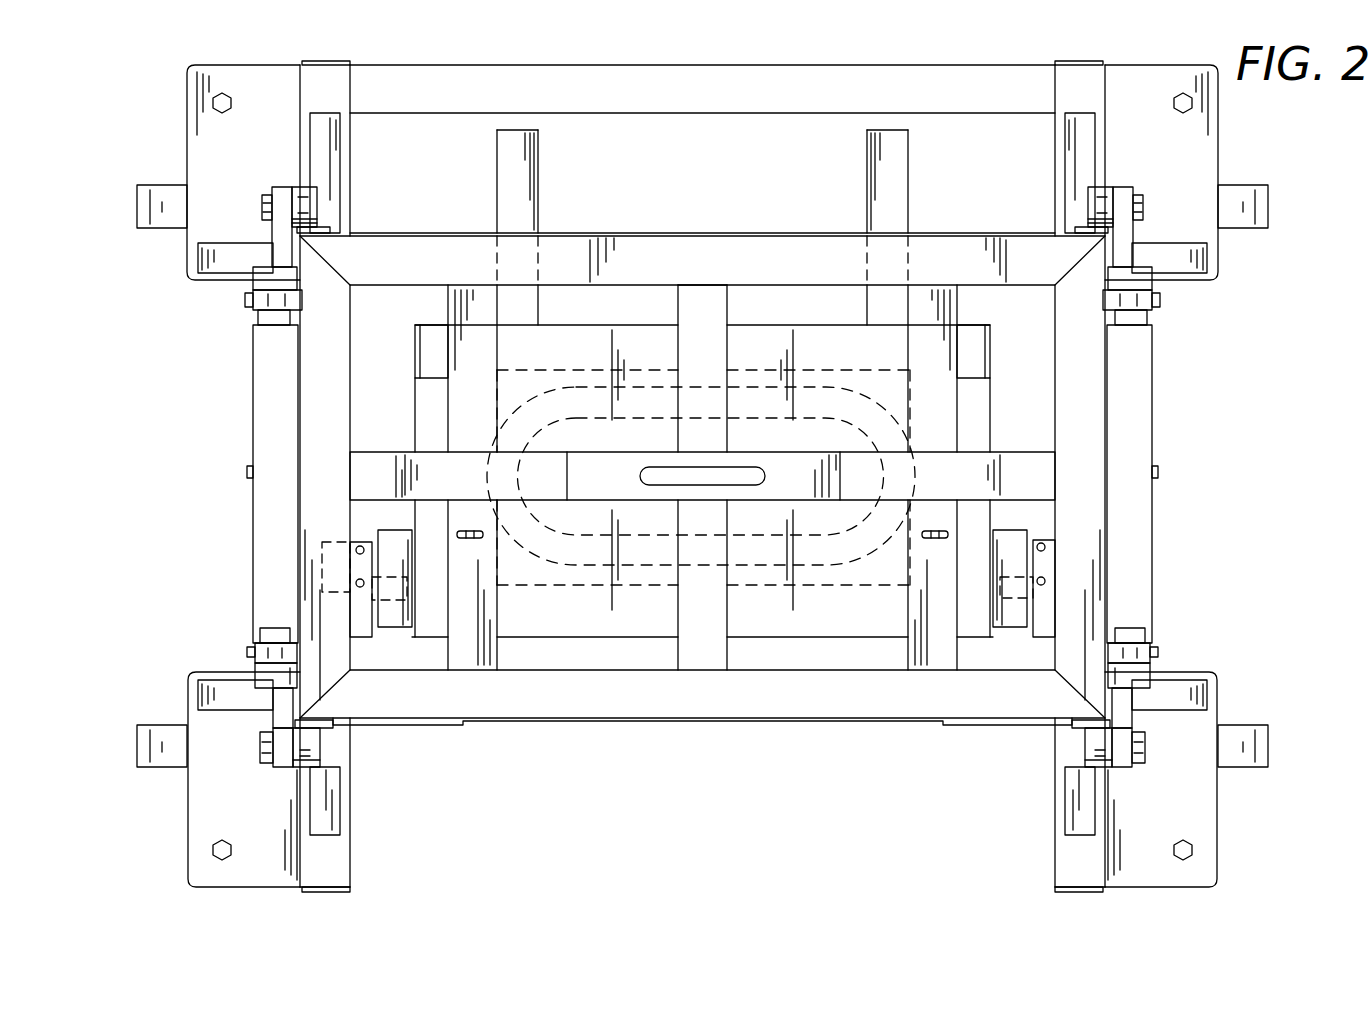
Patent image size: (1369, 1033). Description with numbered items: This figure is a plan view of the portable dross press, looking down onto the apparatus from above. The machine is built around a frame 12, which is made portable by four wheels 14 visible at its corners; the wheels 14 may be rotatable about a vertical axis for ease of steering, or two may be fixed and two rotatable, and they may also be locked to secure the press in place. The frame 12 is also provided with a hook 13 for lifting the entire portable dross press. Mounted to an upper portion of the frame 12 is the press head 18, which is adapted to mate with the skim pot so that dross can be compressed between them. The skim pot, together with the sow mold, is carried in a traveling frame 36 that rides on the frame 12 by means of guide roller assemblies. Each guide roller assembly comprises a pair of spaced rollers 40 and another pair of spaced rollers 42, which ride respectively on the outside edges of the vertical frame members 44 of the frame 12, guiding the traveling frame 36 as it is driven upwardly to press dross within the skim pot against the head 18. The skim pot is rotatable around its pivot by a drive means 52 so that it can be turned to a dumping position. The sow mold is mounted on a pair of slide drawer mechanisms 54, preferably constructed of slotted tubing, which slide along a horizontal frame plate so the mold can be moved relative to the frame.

The frame 12 is at (743, 720).
The hook 13 is at (740, 472).
The wheels 14 is at (150, 185).
The press head 18 is at (825, 567).
The traveling frame 36 is at (1158, 622).
The spaced rollers 40 is at (320, 743).
The spaced rollers 42 is at (258, 670).
The vertical frame members 44 is at (1082, 232).
The drive means 52 is at (333, 540).
The slide drawer mechanisms 54 is at (540, 172).